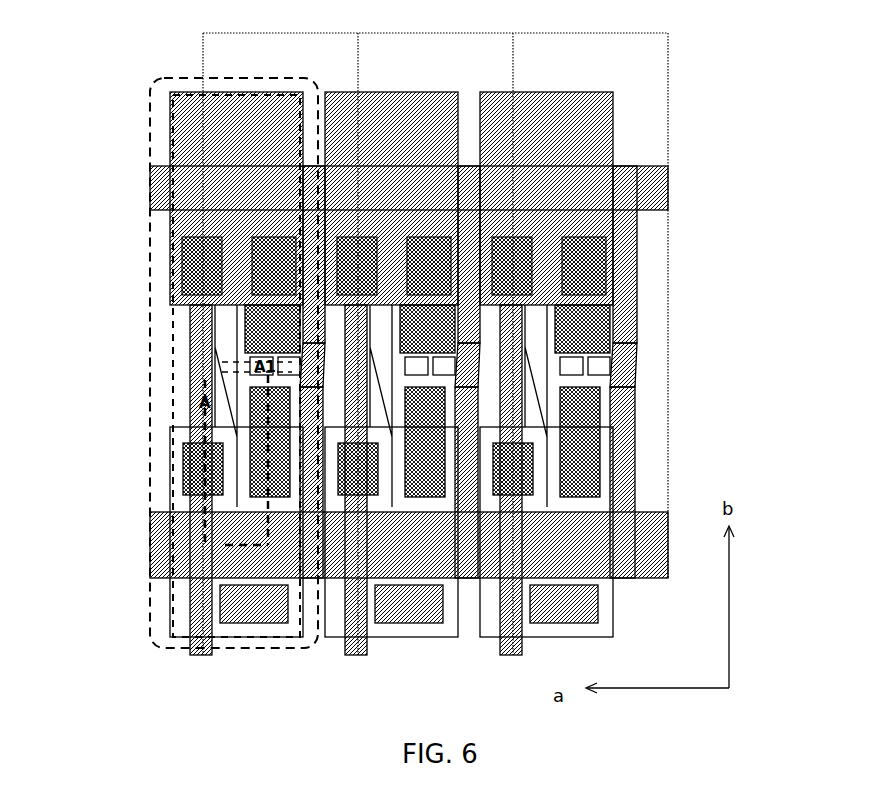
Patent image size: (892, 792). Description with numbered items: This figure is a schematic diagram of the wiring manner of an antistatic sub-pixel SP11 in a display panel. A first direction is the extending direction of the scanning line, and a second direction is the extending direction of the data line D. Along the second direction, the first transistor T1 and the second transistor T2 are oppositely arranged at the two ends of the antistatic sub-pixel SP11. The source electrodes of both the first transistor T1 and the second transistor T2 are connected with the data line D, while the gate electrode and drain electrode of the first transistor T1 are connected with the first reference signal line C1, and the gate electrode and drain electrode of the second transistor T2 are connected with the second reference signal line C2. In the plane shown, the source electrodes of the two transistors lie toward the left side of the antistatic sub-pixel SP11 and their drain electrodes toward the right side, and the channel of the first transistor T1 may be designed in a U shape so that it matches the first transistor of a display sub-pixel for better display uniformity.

The antistatic sub-pixel SP11 is at (152, 79).
The second transistor T2 is at (152, 168).
The second reference signal line C2 is at (152, 212).
The data line D is at (192, 368).
The first reference signal line C1 is at (157, 530).
The first transistor T1 is at (173, 586).